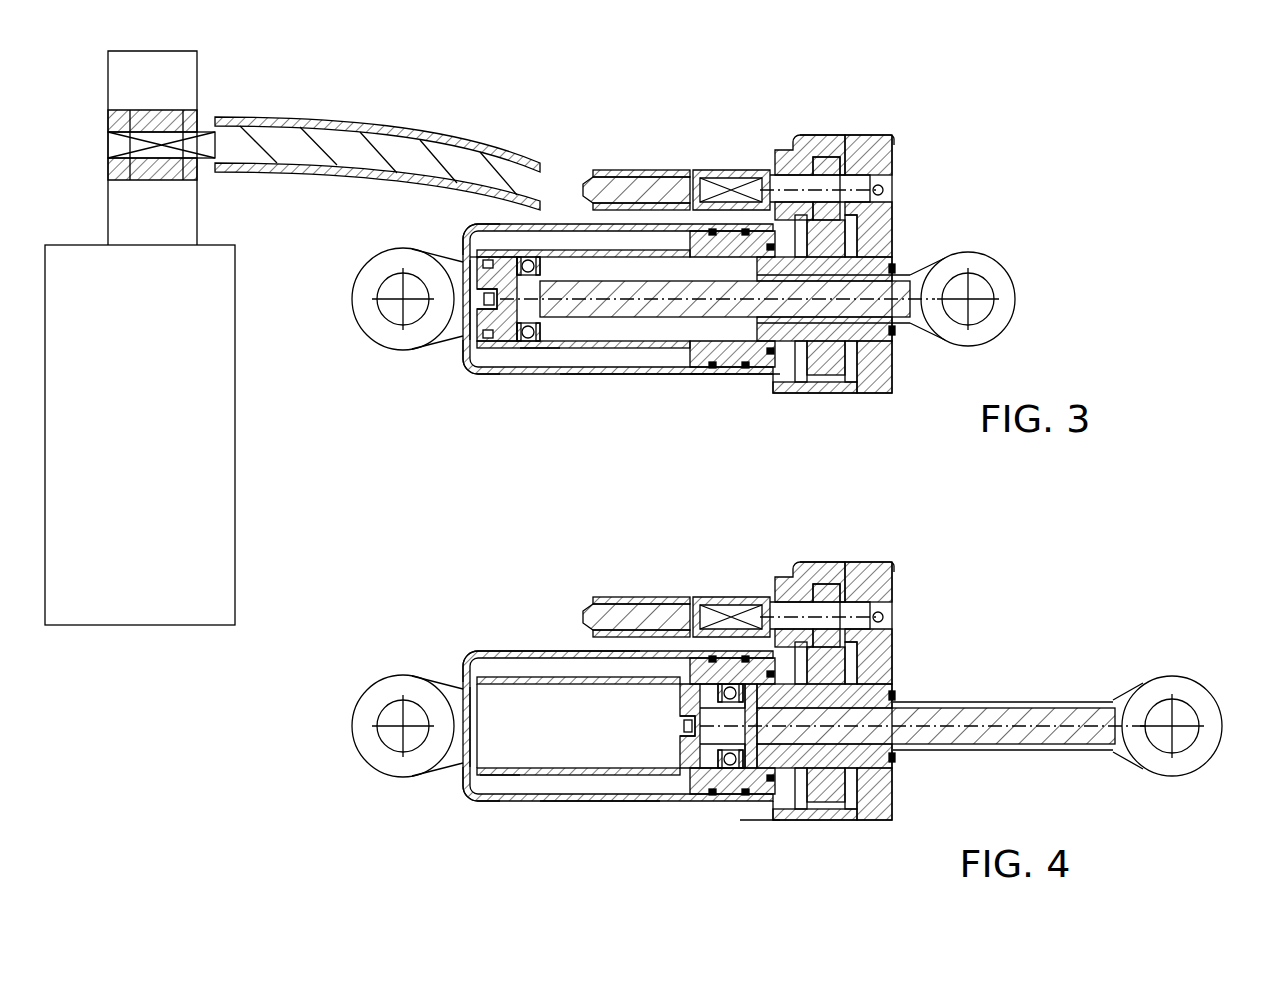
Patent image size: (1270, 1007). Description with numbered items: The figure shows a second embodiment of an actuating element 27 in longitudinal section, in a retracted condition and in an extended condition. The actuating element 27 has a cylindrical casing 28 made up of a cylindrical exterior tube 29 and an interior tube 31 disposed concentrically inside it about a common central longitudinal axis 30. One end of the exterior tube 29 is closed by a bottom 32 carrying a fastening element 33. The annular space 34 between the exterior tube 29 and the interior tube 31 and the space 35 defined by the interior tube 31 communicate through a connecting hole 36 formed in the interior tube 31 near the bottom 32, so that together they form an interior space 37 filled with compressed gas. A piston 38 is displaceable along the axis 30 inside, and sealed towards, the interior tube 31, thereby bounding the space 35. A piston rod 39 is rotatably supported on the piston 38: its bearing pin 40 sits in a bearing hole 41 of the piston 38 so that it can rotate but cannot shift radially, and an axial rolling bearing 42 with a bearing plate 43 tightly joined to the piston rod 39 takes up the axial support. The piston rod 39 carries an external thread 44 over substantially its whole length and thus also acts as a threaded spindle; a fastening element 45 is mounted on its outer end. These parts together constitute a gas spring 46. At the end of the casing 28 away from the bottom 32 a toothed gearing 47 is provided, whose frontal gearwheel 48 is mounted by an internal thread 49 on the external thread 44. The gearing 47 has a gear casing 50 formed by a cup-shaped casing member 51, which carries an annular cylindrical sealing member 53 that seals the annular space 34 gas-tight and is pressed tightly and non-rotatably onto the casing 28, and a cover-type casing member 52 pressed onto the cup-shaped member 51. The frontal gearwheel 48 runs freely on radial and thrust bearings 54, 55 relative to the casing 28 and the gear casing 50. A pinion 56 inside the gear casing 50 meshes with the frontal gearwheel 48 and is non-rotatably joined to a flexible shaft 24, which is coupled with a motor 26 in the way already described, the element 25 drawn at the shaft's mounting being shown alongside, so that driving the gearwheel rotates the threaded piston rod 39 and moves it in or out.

In FIG. 3, the flexible shaft 24 is at (672, 190).
In FIG. 4, the flexible shaft 24 is at (733, 588).
In FIG. 3, the pivot post 25 is at (180, 214).
In FIG. 3, the motor 26 is at (131, 433).
In FIG. 3, the actuating element 27 is at (710, 378).
In FIG. 4, the actuating element 27 is at (760, 857).
In FIG. 3, the casing 28 is at (650, 377).
In FIG. 4, the casing 28 is at (618, 756).
In FIG. 3, the exterior tube 29 is at (610, 372).
In FIG. 4, the exterior tube 29 is at (600, 830).
In FIG. 3, the central longitudinal axis 30 is at (850, 297).
In FIG. 4, the central longitudinal axis 30 is at (950, 701).
In FIG. 3, the interior tube 31 is at (564, 346).
In FIG. 4, the interior tube 31 is at (578, 769).
In FIG. 3, the bottom 32 is at (468, 366).
In FIG. 4, the bottom 32 is at (451, 789).
In FIG. 3, the fastening element 33 is at (375, 326).
In FIG. 4, the fastening element 33 is at (401, 743).
In FIG. 3, the annular space 34 is at (534, 358).
In FIG. 4, the annular space 34 is at (496, 818).
In FIG. 3, the space 35 is at (470, 265).
In FIG. 4, the space 35 is at (519, 726).
In FIG. 3, the connecting hole 36 is at (470, 240).
In FIG. 4, the connecting hole 36 is at (452, 660).
In FIG. 3, the interior space 37 is at (500, 357).
In FIG. 4, the interior space 37 is at (453, 774).
In FIG. 3, the piston 38 is at (488, 340).
In FIG. 4, the piston 38 is at (701, 773).
In FIG. 3, the piston rod 39 is at (683, 308).
In FIG. 4, the piston rod 39 is at (925, 679).
In FIG. 3, the bearing pin 40 is at (498, 302).
In FIG. 4, the bearing pin 40 is at (656, 716).
In FIG. 3, the bearing hole 41 is at (485, 295).
In FIG. 4, the bearing hole 41 is at (655, 738).
In FIG. 3, the axial rolling bearing 42 is at (538, 254).
In FIG. 4, the axial rolling bearing 42 is at (719, 773).
In FIG. 3, the bearing plate 43 is at (545, 257).
In FIG. 3, the external thread 44 is at (628, 279).
In FIG. 4, the external thread 44 is at (1003, 691).
In FIG. 3, the fastening element 45 is at (1003, 283).
In FIG. 4, the fastening element 45 is at (1188, 704).
In FIG. 3, the gas spring 46 is at (740, 378).
In FIG. 4, the gas spring 46 is at (536, 606).
In FIG. 3, the toothed gearing 47 is at (895, 132).
In FIG. 4, the toothed gearing 47 is at (856, 663).
In FIG. 3, the frontal gearwheel 48 is at (830, 360).
In FIG. 4, the frontal gearwheel 48 is at (887, 702).
In FIG. 3, the internal thread 49 is at (812, 355).
In FIG. 4, the internal thread 49 is at (879, 721).
In FIG. 3, the gear casing 50 is at (888, 168).
In FIG. 4, the gear casing 50 is at (909, 613).
In FIG. 3, the cup-shaped casing member 51 is at (805, 140).
In FIG. 4, the cup-shaped casing member 51 is at (810, 577).
In FIG. 3, the cover-type casing member 52 is at (880, 362).
In FIG. 4, the cover-type casing member 52 is at (909, 791).
In FIG. 3, the sealing member 53 is at (728, 245).
In FIG. 4, the sealing member 53 is at (732, 667).
In FIG. 3, the radial bearing 54 is at (893, 258).
In FIG. 4, the radial bearing 54 is at (860, 717).
In FIG. 3, the thrust bearing 55 is at (852, 386).
In FIG. 4, the thrust bearing 55 is at (867, 808).
In FIG. 3, the pinion 56 is at (832, 155).
In FIG. 4, the pinion 56 is at (831, 577).